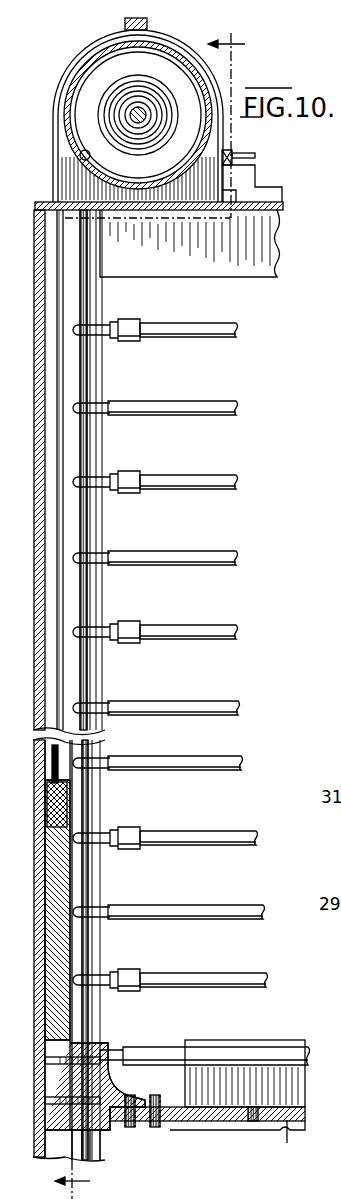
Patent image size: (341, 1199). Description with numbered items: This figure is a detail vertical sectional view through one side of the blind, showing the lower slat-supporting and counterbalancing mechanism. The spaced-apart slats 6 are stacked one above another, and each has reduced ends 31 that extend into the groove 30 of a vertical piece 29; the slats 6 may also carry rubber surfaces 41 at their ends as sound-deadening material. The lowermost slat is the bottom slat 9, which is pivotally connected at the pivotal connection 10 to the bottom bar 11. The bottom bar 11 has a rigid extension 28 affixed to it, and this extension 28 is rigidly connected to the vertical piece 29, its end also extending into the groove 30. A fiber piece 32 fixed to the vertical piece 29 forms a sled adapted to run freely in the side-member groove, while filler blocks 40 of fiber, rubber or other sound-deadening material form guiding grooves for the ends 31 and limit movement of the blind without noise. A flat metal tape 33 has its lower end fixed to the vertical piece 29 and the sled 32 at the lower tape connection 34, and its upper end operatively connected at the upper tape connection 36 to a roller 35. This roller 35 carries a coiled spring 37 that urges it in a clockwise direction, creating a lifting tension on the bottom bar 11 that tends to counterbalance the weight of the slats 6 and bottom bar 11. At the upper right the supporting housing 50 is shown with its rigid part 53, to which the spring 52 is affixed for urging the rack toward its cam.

The slats 6 is at (221, 407).
The bottom slat 9 is at (172, 1046).
The pivotal connection 10 is at (105, 1042).
The bottom bar 11 is at (272, 52).
The rigid extension 28 is at (102, 1083).
The vertical piece 29 is at (60, 886).
The groove 30 is at (74, 868).
The reduced ends of the slats 31 is at (88, 632).
The fiber piece 32 is at (48, 768).
The flat metal tape 33 is at (55, 648).
The lower tape connection 34 is at (67, 815).
The roller 35 is at (95, 62).
The upper tape connection 36 is at (82, 160).
The coiled spring 37 is at (160, 85).
The filler blocks 40 is at (92, 525).
The rubber surfaces 41 is at (135, 325).
The supporting housing 50 is at (242, 180).
The spring 52 is at (232, 156).
The rigid part of the housing 53 is at (255, 156).